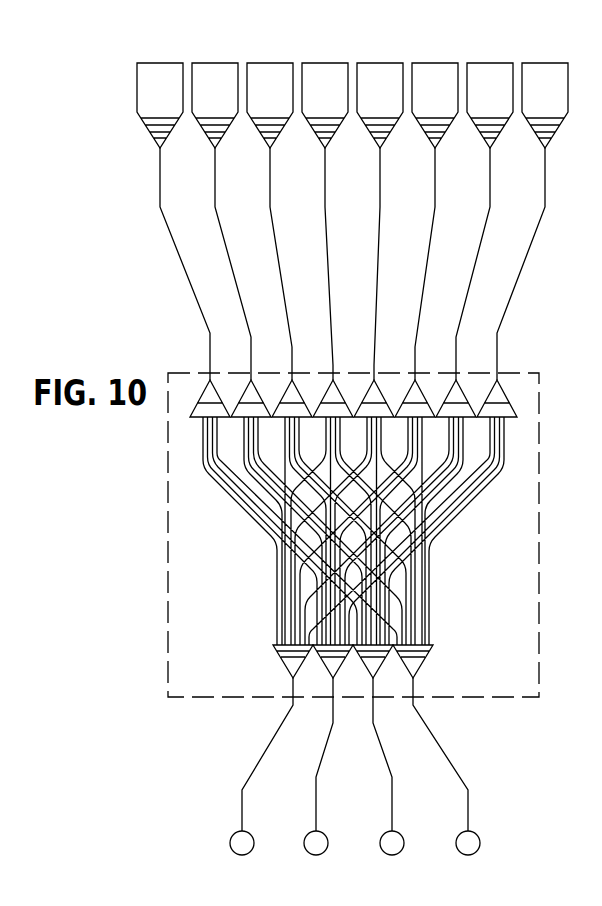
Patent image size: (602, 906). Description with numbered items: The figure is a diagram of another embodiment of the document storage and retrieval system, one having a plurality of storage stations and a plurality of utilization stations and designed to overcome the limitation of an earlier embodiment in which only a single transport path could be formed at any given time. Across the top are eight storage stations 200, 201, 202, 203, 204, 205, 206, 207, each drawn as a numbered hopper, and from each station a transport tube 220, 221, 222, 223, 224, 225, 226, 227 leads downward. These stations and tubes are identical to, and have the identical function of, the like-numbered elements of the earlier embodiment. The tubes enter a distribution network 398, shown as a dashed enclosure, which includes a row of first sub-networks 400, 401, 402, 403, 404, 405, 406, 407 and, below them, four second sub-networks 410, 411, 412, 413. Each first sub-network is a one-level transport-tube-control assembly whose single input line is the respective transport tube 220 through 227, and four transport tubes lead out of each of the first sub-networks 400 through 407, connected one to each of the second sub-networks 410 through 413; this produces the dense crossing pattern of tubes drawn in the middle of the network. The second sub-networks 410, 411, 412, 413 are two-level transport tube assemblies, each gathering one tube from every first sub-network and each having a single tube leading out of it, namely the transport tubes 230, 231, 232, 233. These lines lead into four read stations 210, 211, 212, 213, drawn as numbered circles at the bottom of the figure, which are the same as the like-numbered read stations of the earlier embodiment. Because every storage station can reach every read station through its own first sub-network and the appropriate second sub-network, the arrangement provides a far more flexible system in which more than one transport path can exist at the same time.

The storage station 200 is at (155, 63).
The storage station 201 is at (210, 63).
The storage station 202 is at (265, 63).
The storage station 203 is at (320, 63).
The storage station 204 is at (375, 63).
The storage station 205 is at (430, 63).
The storage station 206 is at (485, 63).
The storage station 207 is at (540, 63).
The transport tube 220 is at (160, 185).
The transport tube 221 is at (215, 185).
The transport tube 222 is at (270, 185).
The transport tube 223 is at (325, 185).
The transport tube 224 is at (380, 185).
The transport tube 225 is at (435, 185).
The transport tube 226 is at (490, 185).
The transport tube 227 is at (545, 185).
The distribution network 398 is at (539, 538).
The first sub-network 400 is at (204, 392).
The first sub-network 401 is at (245, 392).
The first sub-network 402 is at (286, 392).
The first sub-network 403 is at (327, 392).
The first sub-network 404 is at (368, 392).
The first sub-network 405 is at (409, 392).
The first sub-network 406 is at (450, 392).
The first sub-network 407 is at (491, 392).
The second sub-network 410 is at (287, 668).
The second sub-network 411 is at (327, 668).
The second sub-network 412 is at (367, 668).
The second sub-network 413 is at (407, 668).
The transport tube 230 is at (242, 800).
The transport tube 231 is at (316, 800).
The transport tube 232 is at (392, 800).
The transport tube 233 is at (468, 800).
The read station 210 is at (233, 836).
The read station 211 is at (307, 836).
The read station 212 is at (383, 836).
The read station 213 is at (459, 836).